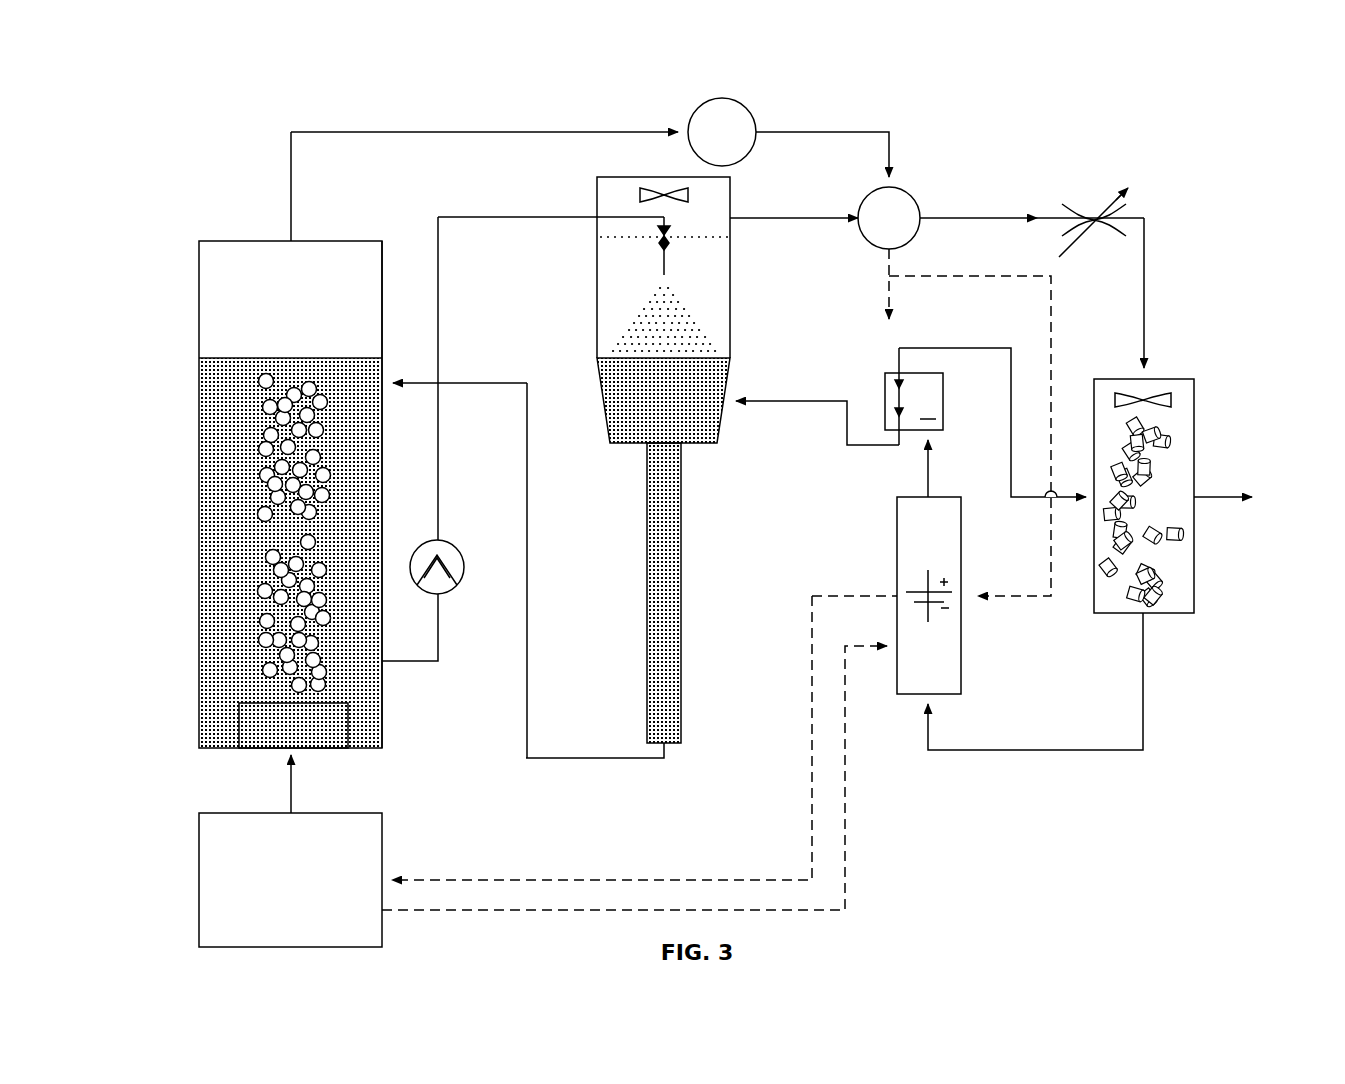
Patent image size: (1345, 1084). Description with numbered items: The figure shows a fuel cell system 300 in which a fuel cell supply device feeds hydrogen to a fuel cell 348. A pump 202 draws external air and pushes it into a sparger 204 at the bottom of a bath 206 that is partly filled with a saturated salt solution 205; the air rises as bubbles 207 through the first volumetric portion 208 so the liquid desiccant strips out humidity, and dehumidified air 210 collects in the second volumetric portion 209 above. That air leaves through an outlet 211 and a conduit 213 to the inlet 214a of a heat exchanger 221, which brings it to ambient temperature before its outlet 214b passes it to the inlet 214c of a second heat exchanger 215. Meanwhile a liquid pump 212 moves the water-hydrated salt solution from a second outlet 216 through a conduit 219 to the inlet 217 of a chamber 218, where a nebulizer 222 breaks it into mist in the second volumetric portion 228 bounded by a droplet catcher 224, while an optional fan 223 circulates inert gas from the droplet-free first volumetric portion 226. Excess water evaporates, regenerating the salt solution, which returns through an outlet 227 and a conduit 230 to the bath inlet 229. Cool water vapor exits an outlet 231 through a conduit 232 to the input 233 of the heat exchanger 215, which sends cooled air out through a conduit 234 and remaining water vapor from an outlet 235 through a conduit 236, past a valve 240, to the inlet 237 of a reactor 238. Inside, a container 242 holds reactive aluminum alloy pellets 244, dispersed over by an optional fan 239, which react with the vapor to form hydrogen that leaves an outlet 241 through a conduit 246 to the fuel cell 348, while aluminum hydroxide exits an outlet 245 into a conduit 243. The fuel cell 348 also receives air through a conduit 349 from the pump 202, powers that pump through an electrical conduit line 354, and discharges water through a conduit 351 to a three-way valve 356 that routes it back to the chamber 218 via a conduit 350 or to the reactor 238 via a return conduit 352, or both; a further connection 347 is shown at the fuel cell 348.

The fuel cell system 300 is at (1250, 60).
The pump 202 is at (290, 851).
The sparger 204 is at (293, 725).
The saturated salt solution 205 is at (250, 665).
The bath 206 is at (197, 462).
The bubbles 207 is at (282, 548).
The first volumetric portion 208 is at (210, 390).
The second volumetric portion 209 is at (210, 270).
The dehumidified air 210 is at (350, 260).
The outlet 211 is at (290, 232).
The liquid pump 212 is at (453, 593).
The conduit 213 is at (546, 132).
The inlet 214a is at (701, 122).
The outlet 214b is at (752, 120).
The inlet 214c is at (878, 184).
The heat exchanger 215 is at (889, 218).
The second outlet 216 is at (383, 663).
The inlet 217 is at (594, 208).
The chamber 218 is at (732, 300).
The conduit 219 is at (440, 224).
The heat exchanger 221 is at (722, 132).
The nebulizer 222 is at (660, 260).
The fan 223 is at (664, 194).
The droplet catcher 224 is at (601, 253).
The first volumetric portion 226 is at (688, 226).
The outlet 227 is at (654, 744).
The second volumetric portion 228 is at (688, 269).
The inlet 229 is at (384, 393).
The conduit 230 is at (526, 527).
The outlet 231 is at (733, 222).
The conduit 232 is at (797, 222).
The input 233 is at (858, 210).
The conduit 234 is at (892, 254).
The outlet 235 is at (920, 205).
The conduit 236 is at (1146, 266).
The inlet 237 is at (1148, 378).
The reactor 238 is at (1194, 565).
The fan 239 is at (1196, 414).
The valve 240 is at (1085, 205).
The outlet 241 is at (1144, 621).
The container 242 is at (1103, 565).
The conduit 243 is at (1246, 497).
The reactive aluminum alloy pellets 244 is at (1190, 461).
The outlet 245 is at (1196, 499).
The conduit 246 is at (1010, 750).
The electrolyzer inlet line 347 is at (938, 703).
The fuel cell 348 is at (897, 545).
The conduit 349 is at (848, 826).
The conduit 350 is at (785, 403).
The conduit 351 is at (915, 447).
The return conduit 352 is at (960, 348).
The electrical conduit line 354 is at (512, 878).
The three-way valve 356 is at (885, 392).